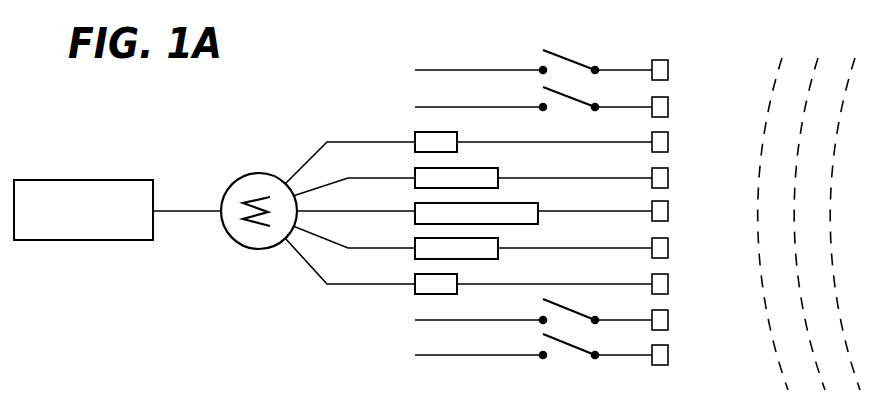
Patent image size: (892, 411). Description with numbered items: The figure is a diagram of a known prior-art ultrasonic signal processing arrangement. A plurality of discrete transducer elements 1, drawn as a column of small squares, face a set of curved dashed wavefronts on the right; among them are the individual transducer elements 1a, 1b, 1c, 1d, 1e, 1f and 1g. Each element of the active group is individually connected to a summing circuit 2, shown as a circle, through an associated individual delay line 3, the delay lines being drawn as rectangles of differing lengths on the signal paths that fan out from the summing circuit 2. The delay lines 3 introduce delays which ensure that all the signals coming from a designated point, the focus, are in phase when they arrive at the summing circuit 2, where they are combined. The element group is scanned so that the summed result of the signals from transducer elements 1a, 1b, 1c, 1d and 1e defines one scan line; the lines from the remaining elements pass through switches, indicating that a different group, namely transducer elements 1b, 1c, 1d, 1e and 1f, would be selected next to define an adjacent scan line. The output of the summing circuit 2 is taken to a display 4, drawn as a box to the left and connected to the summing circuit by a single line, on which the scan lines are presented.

The transducer elements 1 is at (704, 193).
The transducer element 1a is at (657, 146).
The transducer element 1b is at (658, 182).
The transducer element 1c is at (658, 216).
The transducer element 1d is at (658, 251).
The transducer element 1e is at (658, 287).
The transducer element 1f is at (658, 323).
The sensor element 1g is at (658, 357).
The summing circuit 2 is at (258, 173).
The delay lines 3 is at (375, 122).
The display 4 is at (85, 180).